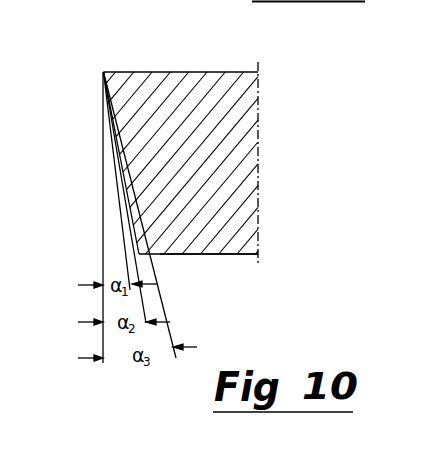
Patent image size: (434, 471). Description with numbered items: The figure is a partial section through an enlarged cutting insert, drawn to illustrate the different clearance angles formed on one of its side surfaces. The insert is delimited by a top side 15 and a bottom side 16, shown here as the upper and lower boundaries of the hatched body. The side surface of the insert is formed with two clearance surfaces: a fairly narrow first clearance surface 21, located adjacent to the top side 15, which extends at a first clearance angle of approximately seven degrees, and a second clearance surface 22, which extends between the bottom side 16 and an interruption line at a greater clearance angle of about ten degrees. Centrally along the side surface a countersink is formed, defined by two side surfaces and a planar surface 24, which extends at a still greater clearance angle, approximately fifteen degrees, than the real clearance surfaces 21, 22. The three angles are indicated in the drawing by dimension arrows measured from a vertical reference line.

The top side 15 is at (184, 71).
The bottom side 16 is at (200, 256).
The first clearance surface 21 is at (103, 107).
The second clearance surface 22 is at (118, 193).
The planar surface 24 is at (139, 228).